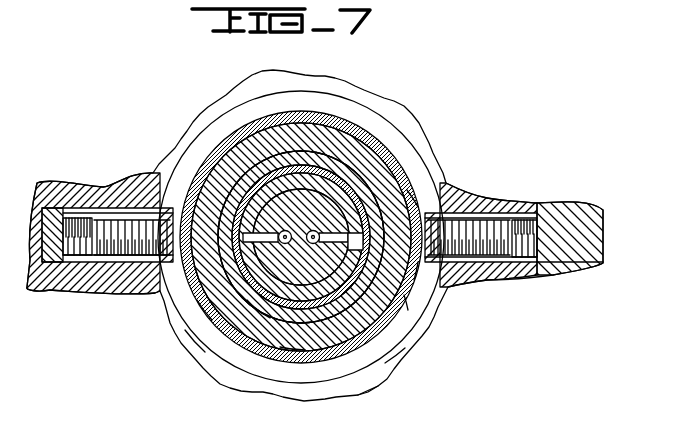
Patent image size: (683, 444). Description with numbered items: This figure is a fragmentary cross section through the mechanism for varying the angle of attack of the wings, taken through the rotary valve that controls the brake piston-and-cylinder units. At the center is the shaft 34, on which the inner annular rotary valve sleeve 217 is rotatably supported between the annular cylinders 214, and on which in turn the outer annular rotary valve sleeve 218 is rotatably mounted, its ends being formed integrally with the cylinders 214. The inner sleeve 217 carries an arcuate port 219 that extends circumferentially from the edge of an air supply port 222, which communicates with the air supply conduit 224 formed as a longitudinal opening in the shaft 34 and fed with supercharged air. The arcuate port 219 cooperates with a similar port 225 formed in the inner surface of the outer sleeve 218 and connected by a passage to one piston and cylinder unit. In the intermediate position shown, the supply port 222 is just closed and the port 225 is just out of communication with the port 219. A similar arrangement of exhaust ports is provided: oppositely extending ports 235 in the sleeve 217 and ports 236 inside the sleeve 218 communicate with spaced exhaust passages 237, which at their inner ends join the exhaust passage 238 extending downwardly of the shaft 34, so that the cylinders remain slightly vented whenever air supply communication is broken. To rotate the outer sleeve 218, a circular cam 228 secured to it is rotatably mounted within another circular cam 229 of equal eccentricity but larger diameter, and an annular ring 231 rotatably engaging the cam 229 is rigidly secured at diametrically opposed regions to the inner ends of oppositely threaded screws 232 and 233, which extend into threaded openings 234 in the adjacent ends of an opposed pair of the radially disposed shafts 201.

The annular cylinder 214 is at (357, 110).
The outer annular rotary valve sleeve 218 is at (375, 118).
The shaft 34 is at (405, 140).
The exhaust port 236 is at (425, 158).
The circular cam 228 is at (268, 143).
The port 225 is at (236, 186).
The inner annular rotary valve sleeve 217 is at (297, 177).
The screw 232 is at (110, 223).
The screw 233 is at (497, 205).
The radially disposed shaft 201 is at (565, 222).
The threaded opening 234 is at (533, 257).
The air supply port 222 is at (190, 312).
The arcuate port 219 is at (200, 338).
The air supply conduit 224 is at (258, 318).
The circular cam 229 is at (292, 365).
The annular ring 231 is at (370, 383).
The exhaust passage 238 is at (400, 358).
The exhaust port 235 is at (425, 318).
The exhaust passage 237 is at (420, 290).